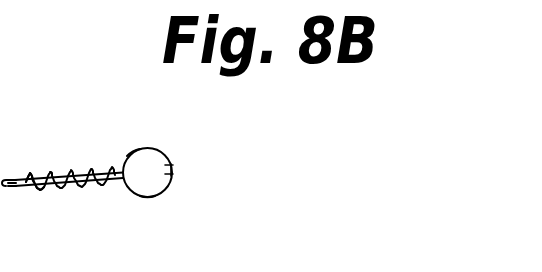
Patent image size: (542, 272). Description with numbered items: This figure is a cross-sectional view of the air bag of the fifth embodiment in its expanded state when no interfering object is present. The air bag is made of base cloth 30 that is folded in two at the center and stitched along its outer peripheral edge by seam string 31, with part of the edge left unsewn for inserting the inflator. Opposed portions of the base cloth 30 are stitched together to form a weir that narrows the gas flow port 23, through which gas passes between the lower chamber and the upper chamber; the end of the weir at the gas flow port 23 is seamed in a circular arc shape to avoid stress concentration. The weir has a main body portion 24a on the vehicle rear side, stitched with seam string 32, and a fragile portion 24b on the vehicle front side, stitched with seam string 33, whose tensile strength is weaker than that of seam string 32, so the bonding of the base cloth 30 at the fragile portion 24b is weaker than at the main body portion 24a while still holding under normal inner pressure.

The gas flow port 23 is at (148, 152).
The base cloth 30 is at (131, 151).
The seam string 31 is at (172, 167).
The seam string 32 is at (100, 191).
The seam string 33 is at (28, 176).
The main body portion 24a is at (108, 165).
The fragile portion 24b is at (43, 195).